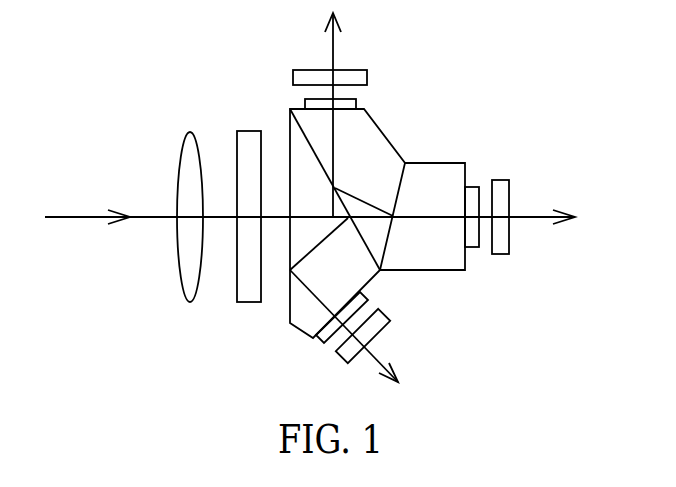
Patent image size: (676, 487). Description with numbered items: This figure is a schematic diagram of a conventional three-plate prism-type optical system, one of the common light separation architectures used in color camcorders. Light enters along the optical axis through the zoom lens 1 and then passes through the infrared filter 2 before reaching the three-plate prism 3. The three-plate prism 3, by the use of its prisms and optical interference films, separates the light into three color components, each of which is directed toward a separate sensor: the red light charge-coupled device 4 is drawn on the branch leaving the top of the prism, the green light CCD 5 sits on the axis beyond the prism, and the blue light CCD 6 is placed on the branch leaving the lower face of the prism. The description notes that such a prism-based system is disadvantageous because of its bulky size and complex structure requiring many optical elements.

The zoom lens 1 is at (184, 172).
The infrared filter 2 is at (244, 157).
The three-plate prism 3 is at (295, 132).
The red light charge-coupled device (CCD) 4 is at (365, 78).
The green light CCD 5 is at (505, 196).
The blue light CCD 6 is at (385, 330).